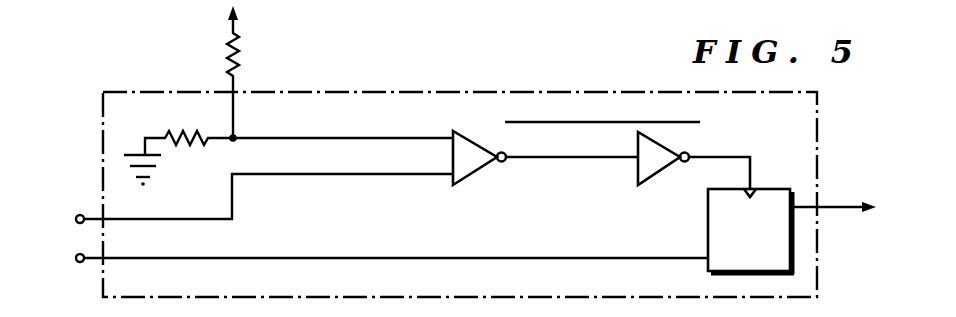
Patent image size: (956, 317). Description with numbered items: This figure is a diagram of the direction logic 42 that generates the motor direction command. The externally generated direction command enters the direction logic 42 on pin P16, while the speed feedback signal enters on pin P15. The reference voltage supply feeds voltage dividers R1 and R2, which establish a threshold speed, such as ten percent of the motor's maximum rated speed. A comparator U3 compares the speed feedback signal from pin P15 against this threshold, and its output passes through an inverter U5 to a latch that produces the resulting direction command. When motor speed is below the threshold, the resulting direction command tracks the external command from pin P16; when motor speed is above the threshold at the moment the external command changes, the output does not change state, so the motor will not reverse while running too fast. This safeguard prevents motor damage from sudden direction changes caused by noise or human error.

The direction logic 42 is at (471, 84).
The voltage divider R1 is at (246, 72).
The voltage divider R2 is at (288, 148).
The comparator U3 is at (545, 162).
The inverter U5 is at (694, 163).
The pin P15 is at (244, 204).
The pin P16 is at (370, 255).